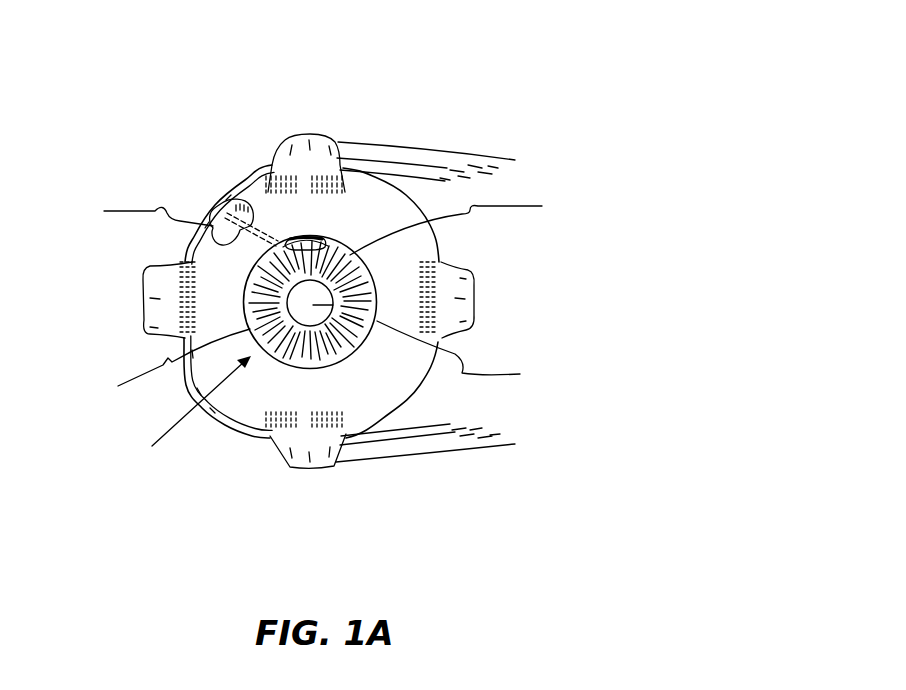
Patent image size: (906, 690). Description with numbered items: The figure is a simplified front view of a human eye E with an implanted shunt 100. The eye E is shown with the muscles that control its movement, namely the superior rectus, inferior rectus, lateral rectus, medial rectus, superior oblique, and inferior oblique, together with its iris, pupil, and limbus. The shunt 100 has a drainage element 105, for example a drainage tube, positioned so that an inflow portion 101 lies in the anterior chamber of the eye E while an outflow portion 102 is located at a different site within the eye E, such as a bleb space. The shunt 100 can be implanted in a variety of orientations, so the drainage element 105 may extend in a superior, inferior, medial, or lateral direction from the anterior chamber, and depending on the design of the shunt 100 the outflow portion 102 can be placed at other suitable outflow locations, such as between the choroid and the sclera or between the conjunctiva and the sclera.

The eye E is at (229, 80).
The shunt 100 is at (334, 233).
The inflow portion 101 is at (315, 233).
The outflow portion 102 is at (222, 203).
The drainage element 105 is at (278, 246).